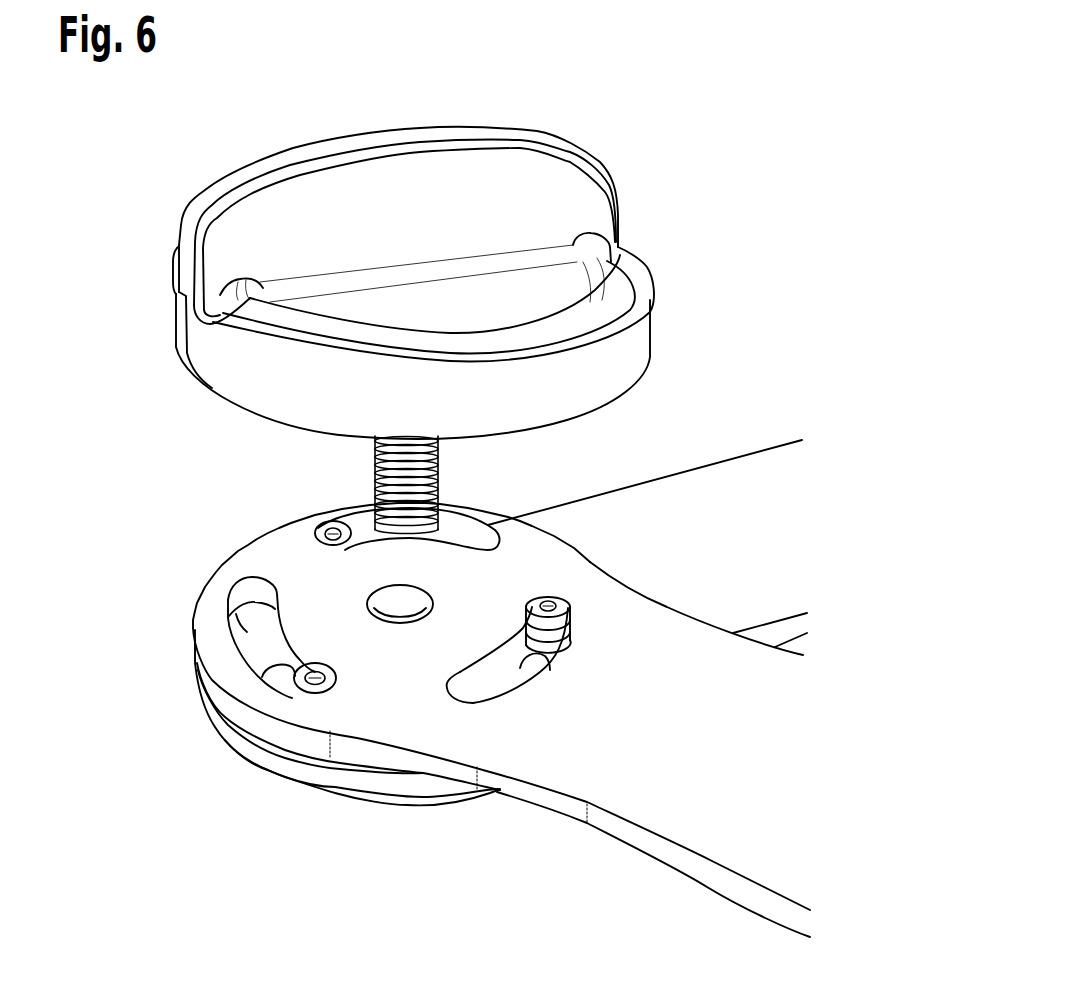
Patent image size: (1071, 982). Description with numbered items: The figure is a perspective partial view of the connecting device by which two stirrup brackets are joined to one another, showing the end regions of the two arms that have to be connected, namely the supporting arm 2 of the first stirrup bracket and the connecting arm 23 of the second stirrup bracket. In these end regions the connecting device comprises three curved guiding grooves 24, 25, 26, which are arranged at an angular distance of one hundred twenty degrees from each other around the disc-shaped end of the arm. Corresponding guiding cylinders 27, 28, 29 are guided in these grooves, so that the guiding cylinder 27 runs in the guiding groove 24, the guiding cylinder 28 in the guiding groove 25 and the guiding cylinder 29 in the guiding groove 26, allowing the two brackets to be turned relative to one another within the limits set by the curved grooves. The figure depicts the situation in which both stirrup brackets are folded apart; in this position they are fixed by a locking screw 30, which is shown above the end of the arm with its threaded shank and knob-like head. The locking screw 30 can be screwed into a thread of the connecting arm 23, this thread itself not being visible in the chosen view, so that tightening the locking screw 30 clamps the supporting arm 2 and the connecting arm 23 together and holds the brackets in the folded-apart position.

The supporting arm 2 is at (733, 836).
The connecting arm 23 is at (735, 473).
The curved guiding groove 24 is at (246, 631).
The curved guiding groove 25 is at (470, 540).
The curved guiding groove 26 is at (512, 682).
The guiding cylinder 27 is at (298, 687).
The guiding cylinder 28 is at (323, 527).
The guiding cylinder 29 is at (562, 608).
The locking screw 30 is at (661, 301).